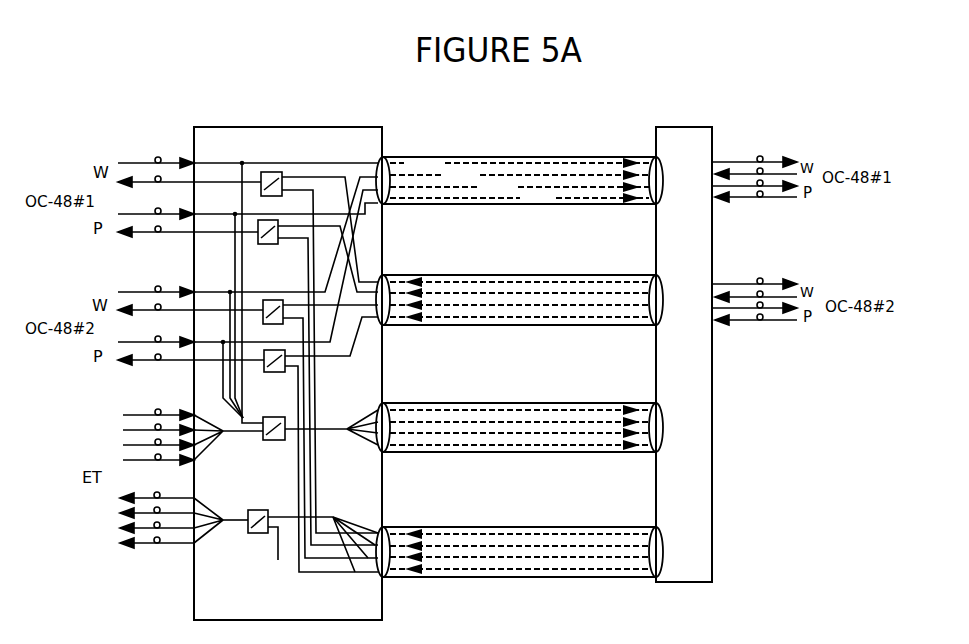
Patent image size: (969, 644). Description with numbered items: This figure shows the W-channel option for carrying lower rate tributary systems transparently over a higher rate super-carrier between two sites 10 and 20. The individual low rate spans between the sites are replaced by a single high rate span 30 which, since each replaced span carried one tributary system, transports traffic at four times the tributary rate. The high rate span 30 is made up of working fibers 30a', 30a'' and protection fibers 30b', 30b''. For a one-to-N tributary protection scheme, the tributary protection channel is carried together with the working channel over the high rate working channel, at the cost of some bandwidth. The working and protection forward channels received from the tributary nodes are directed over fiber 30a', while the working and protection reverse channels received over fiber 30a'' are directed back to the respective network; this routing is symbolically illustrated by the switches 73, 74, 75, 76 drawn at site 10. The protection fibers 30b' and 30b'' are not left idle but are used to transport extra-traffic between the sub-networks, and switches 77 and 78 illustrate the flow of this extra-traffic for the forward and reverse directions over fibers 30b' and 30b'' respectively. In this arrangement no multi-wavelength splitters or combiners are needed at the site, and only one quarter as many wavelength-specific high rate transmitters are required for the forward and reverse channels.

The site 10 is at (372, 127).
The site 20 is at (670, 127).
The high rate span 30 is at (514, 135).
The fiber 30a' is at (519, 199).
The fiber 30a'' is at (519, 319).
The protection fiber 30b' is at (519, 449).
The protection fiber 30b'' is at (519, 569).
The switch 73 is at (272, 172).
The switch 74 is at (273, 244).
The switch 75 is at (283, 325).
The switch 76 is at (281, 372).
The switch 77 is at (262, 440).
The switch 78 is at (250, 533).